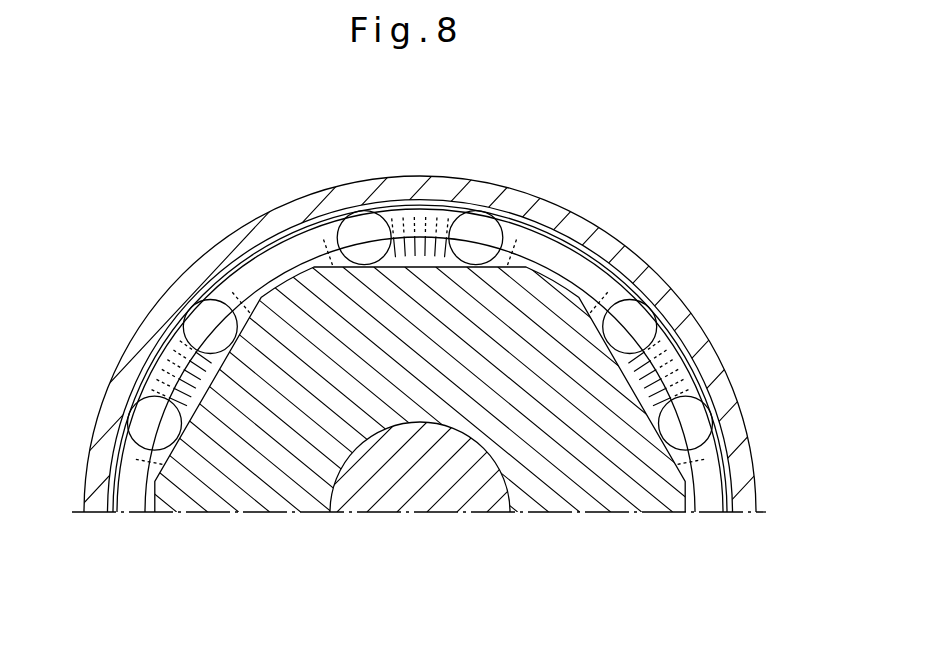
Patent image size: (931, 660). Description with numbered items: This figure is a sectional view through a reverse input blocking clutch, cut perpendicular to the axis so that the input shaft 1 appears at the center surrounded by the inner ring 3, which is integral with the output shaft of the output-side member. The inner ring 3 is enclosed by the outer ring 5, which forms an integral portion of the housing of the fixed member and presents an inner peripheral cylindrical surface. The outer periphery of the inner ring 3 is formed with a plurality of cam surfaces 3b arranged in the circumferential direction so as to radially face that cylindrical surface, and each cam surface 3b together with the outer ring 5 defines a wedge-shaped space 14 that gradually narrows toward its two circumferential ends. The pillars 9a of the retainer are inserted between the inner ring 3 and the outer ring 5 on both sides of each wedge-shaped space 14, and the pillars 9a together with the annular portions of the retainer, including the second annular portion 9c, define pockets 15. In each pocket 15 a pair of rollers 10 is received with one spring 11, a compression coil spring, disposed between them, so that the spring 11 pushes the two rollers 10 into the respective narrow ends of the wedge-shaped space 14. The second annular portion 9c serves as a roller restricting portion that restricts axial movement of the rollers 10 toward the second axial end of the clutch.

The input shaft 1 is at (420, 467).
The inner ring 3 is at (259, 458).
The cam surface 3b is at (328, 242).
The outer ring 5 is at (262, 232).
The pillar 9a is at (247, 277).
The second annular portion 9c is at (668, 352).
The roller 10 is at (362, 238).
The spring 11 is at (412, 252).
The wedge-shaped space 14 is at (505, 257).
The pocket 15 is at (500, 232).